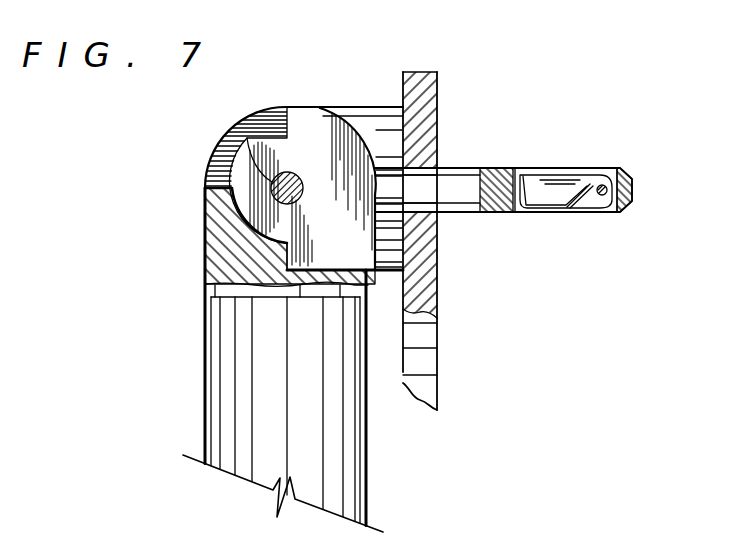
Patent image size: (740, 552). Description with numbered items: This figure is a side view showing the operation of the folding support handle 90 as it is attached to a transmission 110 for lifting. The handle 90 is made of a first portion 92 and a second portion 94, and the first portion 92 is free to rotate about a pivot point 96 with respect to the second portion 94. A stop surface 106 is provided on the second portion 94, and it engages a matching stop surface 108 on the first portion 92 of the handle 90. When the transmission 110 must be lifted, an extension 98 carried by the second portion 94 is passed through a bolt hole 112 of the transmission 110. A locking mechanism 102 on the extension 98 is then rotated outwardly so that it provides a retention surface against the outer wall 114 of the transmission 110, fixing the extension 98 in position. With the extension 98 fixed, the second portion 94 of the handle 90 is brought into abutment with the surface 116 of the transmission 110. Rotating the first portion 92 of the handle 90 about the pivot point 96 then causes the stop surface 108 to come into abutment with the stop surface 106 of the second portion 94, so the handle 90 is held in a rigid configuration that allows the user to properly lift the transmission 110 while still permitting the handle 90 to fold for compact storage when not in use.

The handle 90 is at (185, 270).
The first portion 92 is at (205, 398).
The second portion 94 is at (368, 108).
The pivot point 96 is at (228, 145).
The extension 98 is at (470, 168).
The locking mechanism 102 is at (577, 185).
The stop surface 106 is at (281, 122).
The stop surface 108 is at (205, 186).
The transmission 110 is at (425, 120).
The bolt hole 112 is at (440, 167).
The outer wall 114 is at (437, 333).
The surface 116 is at (402, 372).